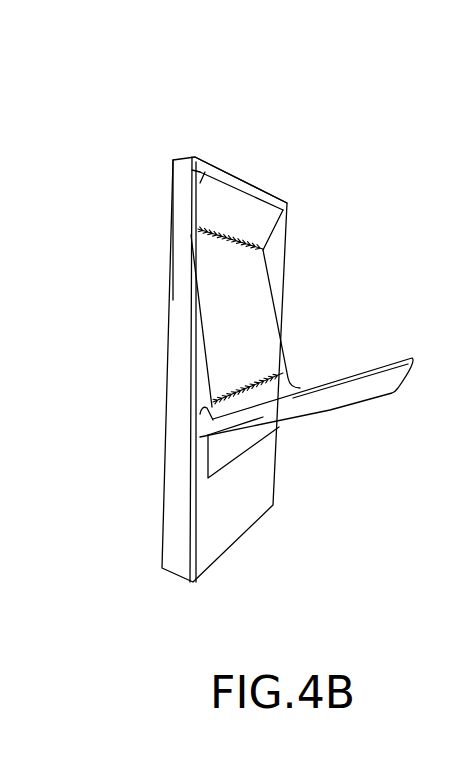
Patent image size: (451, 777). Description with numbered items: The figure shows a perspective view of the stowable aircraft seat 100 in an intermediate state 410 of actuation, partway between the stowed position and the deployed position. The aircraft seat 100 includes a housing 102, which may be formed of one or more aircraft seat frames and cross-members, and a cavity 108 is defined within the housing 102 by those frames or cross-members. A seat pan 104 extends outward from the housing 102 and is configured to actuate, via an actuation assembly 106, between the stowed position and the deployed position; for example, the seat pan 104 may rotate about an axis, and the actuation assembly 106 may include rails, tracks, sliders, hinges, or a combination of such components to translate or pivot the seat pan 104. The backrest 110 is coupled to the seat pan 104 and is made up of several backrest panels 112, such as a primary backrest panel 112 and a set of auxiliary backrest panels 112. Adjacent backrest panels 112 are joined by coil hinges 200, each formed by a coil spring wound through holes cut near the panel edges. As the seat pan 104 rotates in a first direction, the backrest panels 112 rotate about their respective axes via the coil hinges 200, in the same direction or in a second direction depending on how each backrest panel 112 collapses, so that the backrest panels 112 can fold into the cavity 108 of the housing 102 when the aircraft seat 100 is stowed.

The state 410 is at (117, 73).
The stowable aircraft seat 100 is at (152, 597).
The housing 102 is at (183, 190).
The seat pan 104 is at (387, 380).
The actuation assembly 106 is at (290, 402).
The cavity 108 is at (270, 257).
The backrest 110 is at (310, 345).
The backrest panel 112 is at (243, 205).
The coil hinge 200 is at (252, 233).